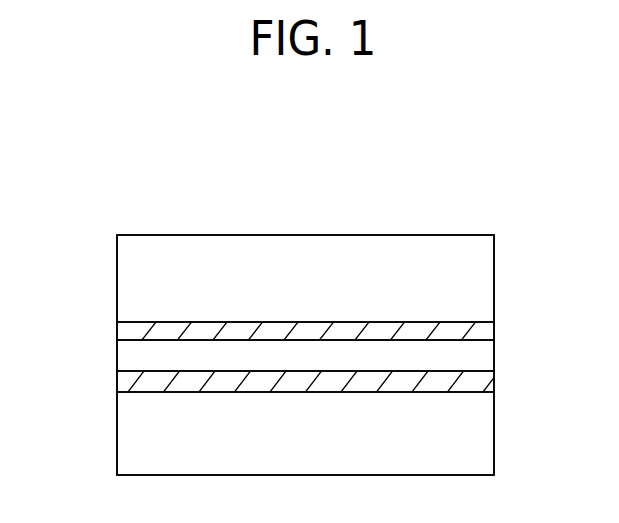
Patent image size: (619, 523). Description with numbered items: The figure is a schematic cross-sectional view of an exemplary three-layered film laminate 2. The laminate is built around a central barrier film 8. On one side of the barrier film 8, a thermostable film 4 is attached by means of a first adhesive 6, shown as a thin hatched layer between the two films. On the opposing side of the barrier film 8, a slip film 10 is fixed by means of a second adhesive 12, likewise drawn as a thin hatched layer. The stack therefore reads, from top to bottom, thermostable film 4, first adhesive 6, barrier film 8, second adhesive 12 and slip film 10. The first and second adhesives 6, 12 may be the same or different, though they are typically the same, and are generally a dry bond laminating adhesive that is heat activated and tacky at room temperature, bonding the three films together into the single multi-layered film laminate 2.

The tri-layered film laminate 2 is at (449, 180).
The thermostable film 4 is at (494, 278).
The first adhesive 6 is at (117, 328).
The barrier film 8 is at (494, 355).
The second adhesive 12 is at (117, 382).
The slip film 10 is at (494, 427).